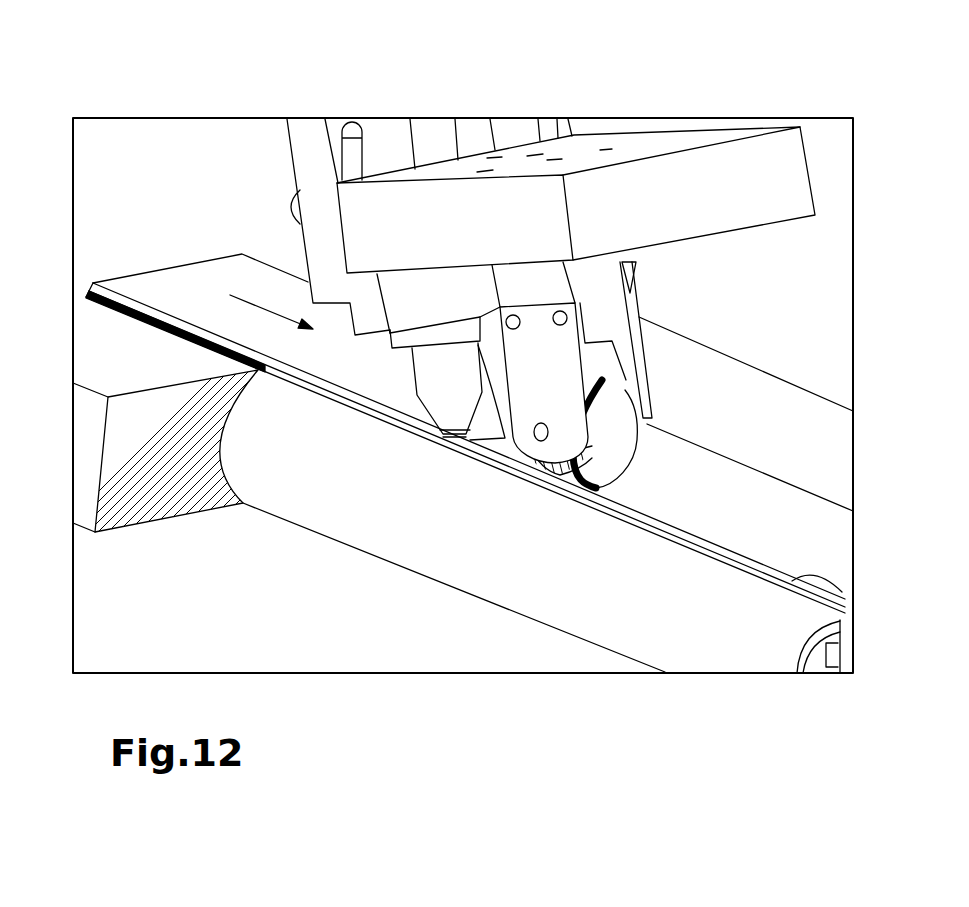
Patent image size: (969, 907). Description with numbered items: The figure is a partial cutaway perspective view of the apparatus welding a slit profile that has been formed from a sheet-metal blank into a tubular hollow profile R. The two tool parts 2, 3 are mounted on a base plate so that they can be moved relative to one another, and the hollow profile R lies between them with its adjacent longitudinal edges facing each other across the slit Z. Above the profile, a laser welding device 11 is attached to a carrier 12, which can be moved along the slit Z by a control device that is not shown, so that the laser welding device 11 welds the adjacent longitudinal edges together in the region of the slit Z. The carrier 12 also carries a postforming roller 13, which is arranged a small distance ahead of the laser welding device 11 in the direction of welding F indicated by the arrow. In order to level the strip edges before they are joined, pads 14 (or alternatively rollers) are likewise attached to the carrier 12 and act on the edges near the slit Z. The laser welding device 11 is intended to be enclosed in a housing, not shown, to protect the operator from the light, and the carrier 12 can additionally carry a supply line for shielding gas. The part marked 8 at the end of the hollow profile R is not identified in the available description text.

The base block 2 is at (105, 337).
The support plate 3 is at (210, 272).
The end bracket 8 is at (823, 662).
The nozzle 11 is at (427, 373).
The carrier block 12 is at (647, 183).
The pressure wheel 13 is at (642, 458).
The application point 14 is at (478, 428).
The roller R is at (603, 578).
The zone Z is at (783, 582).
The feed direction F is at (271, 309).